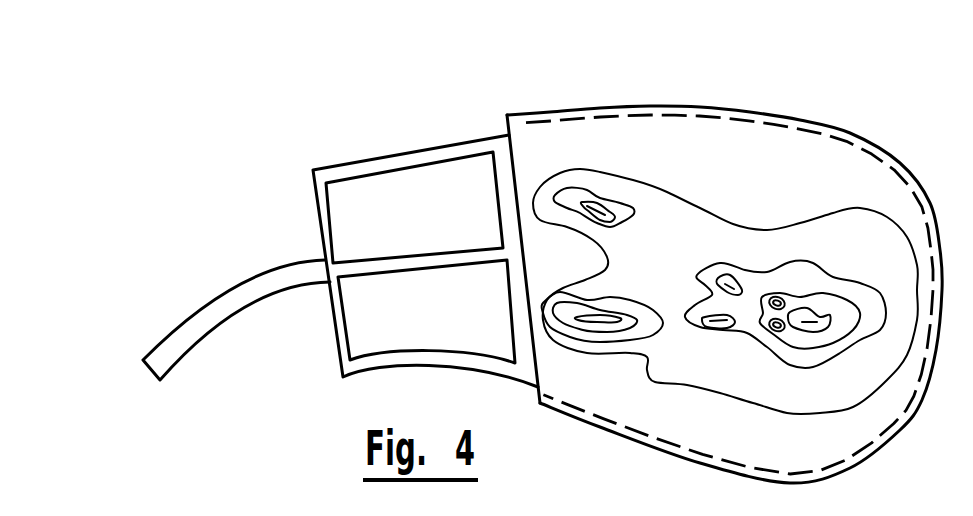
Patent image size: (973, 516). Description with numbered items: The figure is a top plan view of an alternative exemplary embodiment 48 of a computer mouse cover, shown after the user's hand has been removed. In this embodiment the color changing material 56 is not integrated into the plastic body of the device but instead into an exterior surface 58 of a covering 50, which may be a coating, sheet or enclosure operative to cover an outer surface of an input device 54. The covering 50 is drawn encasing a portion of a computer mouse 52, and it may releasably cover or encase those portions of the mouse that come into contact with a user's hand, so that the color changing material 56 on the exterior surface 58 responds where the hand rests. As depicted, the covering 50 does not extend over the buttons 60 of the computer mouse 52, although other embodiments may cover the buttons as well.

The alternative exemplary embodiment 48 is at (732, 256).
The covering 50 is at (708, 106).
The computer mouse 52 is at (425, 223).
The input device 54 is at (494, 137).
The color changing material 56 is at (777, 218).
The exterior surface 58 is at (686, 171).
The buttons 60 is at (449, 216).